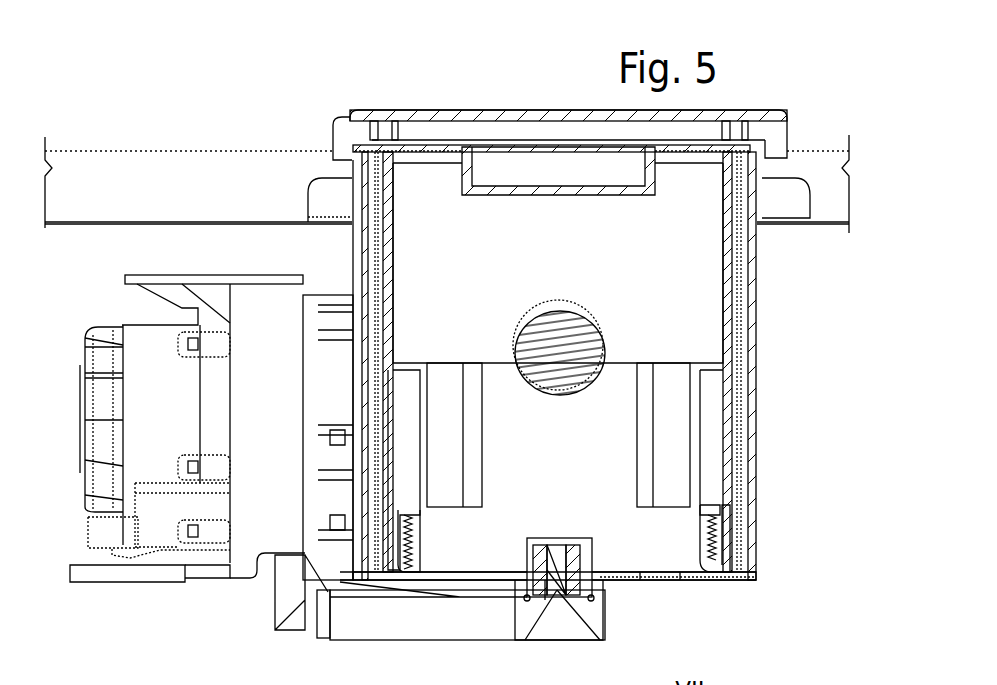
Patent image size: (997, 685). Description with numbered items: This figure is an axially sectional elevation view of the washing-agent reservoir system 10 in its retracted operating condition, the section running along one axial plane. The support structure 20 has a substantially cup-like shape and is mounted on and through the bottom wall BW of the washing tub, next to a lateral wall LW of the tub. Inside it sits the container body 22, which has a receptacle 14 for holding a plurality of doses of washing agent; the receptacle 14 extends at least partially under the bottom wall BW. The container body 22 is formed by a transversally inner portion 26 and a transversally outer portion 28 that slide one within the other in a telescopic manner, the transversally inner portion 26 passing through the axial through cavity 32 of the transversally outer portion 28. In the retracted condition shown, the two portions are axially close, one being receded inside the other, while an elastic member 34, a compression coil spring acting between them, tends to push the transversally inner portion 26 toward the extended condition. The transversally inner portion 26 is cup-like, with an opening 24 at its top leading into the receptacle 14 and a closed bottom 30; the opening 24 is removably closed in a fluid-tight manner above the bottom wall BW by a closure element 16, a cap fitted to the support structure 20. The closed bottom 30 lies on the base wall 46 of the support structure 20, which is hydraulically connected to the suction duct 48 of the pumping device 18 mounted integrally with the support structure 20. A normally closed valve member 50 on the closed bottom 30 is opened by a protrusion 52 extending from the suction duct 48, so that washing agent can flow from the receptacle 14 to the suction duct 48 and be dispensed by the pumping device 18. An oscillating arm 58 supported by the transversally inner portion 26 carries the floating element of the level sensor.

The system 10 is at (586, 83).
The receptacle 14 is at (541, 262).
The closure element 16 is at (773, 118).
The pumping device 18 is at (78, 422).
The support structure 20 is at (463, 323).
The container body 22 is at (480, 323).
The opening 24 is at (466, 178).
The transversally inner portion 26 is at (380, 172).
The transversally outer portion 28 is at (380, 206).
The closed bottom 30 is at (675, 565).
The axial through cavity 32 is at (733, 268).
The elastic member 34 is at (717, 543).
The base wall 46 is at (690, 573).
The suction duct 48 is at (440, 612).
The valve member 50 is at (548, 536).
The protrusion 52 is at (552, 617).
The oscillating arm 58 is at (572, 378).
The bottom wall BW is at (97, 222).
The lateral wall LW is at (820, 133).